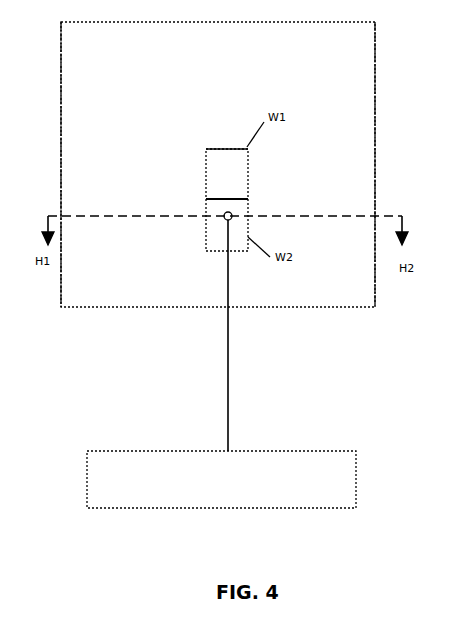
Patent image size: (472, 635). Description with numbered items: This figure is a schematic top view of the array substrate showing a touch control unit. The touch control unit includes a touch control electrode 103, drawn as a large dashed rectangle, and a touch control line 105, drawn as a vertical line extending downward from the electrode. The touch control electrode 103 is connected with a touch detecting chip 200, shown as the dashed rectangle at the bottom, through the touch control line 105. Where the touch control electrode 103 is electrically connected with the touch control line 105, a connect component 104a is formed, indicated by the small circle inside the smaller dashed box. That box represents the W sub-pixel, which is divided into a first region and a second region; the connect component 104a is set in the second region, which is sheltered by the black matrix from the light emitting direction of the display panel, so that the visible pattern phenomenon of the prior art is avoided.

The touch control electrode 103 is at (378, 161).
The connect component 104a is at (224, 214).
The touch control line 105 is at (229, 378).
The touch detecting chip 200 is at (356, 480).